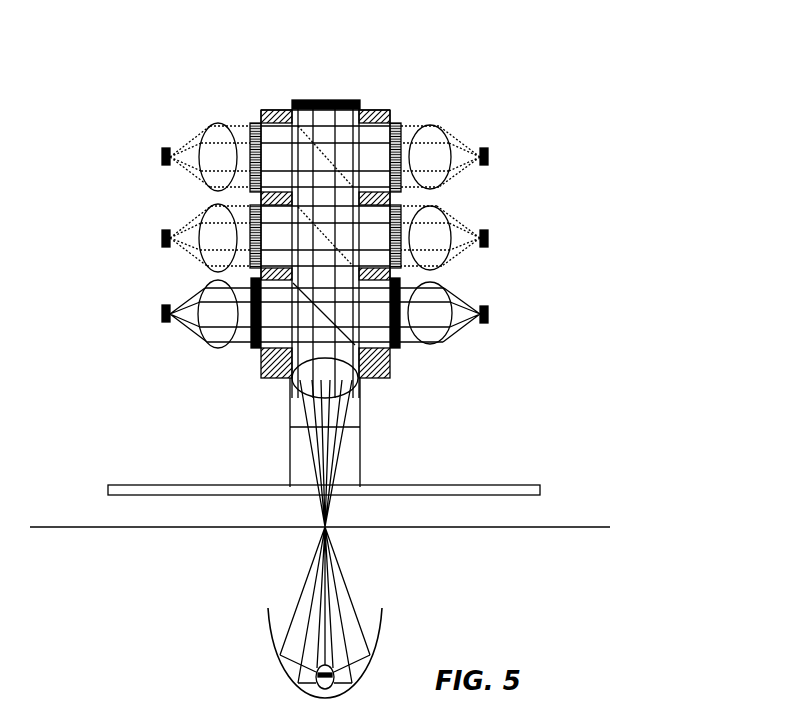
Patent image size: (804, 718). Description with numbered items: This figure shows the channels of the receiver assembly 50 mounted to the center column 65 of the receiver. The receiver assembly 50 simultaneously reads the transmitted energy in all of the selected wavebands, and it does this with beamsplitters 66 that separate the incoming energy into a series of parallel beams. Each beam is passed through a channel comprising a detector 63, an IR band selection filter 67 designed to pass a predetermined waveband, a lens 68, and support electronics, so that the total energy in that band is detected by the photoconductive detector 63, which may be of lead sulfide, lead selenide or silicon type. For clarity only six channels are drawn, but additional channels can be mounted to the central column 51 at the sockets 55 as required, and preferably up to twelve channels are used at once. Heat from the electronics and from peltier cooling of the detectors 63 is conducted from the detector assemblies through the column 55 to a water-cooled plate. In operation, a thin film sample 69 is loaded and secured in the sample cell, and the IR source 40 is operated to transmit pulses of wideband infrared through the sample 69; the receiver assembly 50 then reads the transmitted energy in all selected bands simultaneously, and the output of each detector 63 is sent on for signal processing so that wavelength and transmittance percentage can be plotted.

The IR source 40 is at (373, 642).
The receiver assembly 50 is at (465, 195).
The central column 51 is at (362, 442).
The sockets 55 is at (270, 243).
The detector 63 is at (155, 307).
The center column 65 is at (375, 78).
The beamsplitters 66 is at (420, 306).
The IR band selection filter 67 is at (387, 337).
The lens 68 is at (227, 318).
The thin film sample 69 is at (580, 527).